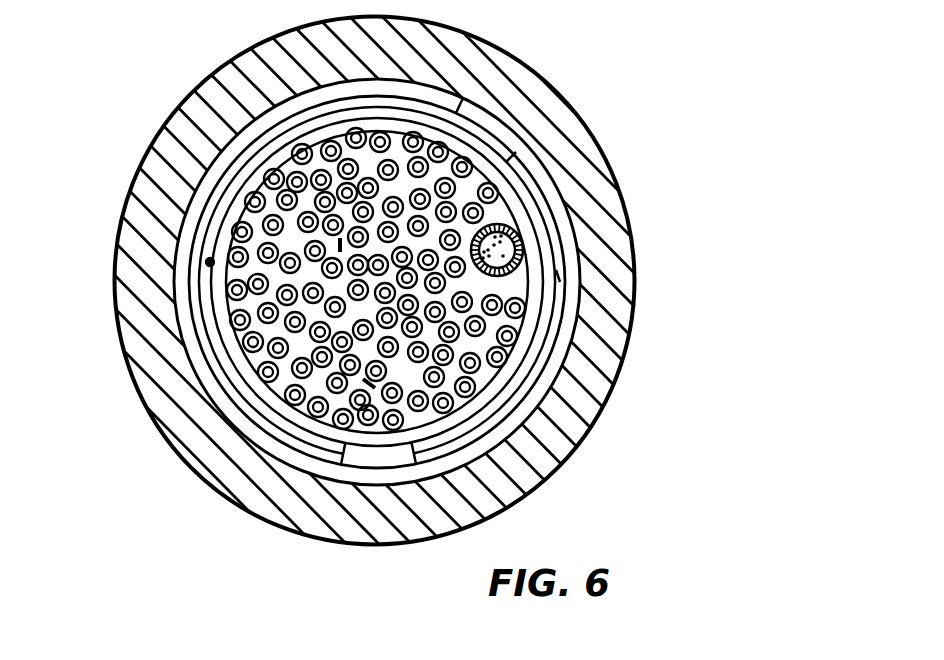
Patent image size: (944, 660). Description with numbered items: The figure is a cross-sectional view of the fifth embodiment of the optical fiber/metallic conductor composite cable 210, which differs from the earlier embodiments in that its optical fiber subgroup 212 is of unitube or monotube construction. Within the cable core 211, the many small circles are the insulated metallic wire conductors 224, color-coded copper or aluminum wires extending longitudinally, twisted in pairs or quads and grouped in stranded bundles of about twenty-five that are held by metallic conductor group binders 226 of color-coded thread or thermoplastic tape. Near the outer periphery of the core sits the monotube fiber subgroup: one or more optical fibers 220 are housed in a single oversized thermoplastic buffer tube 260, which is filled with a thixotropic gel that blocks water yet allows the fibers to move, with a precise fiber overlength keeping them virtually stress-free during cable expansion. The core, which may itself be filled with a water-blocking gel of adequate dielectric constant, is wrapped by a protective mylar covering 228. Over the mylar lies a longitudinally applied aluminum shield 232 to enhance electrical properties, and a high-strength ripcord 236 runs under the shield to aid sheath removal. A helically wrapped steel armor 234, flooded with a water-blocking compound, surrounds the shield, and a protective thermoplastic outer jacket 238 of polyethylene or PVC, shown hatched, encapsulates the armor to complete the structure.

The composite cable 210 is at (125, 181).
The cable core 211 is at (250, 357).
The optical fiber subgroup 212 is at (558, 279).
The optical fibers 220 is at (523, 246).
The insulated metallic wire conductors 224 is at (395, 355).
The metallic conductor group binders 226 is at (364, 382).
The mylar covering 228 is at (582, 310).
The aluminum shield 232 is at (305, 443).
The steel armor 234 is at (548, 178).
The ripcord 236 is at (208, 262).
The outer jacket 238 is at (546, 112).
The buffer tube 260 is at (504, 260).